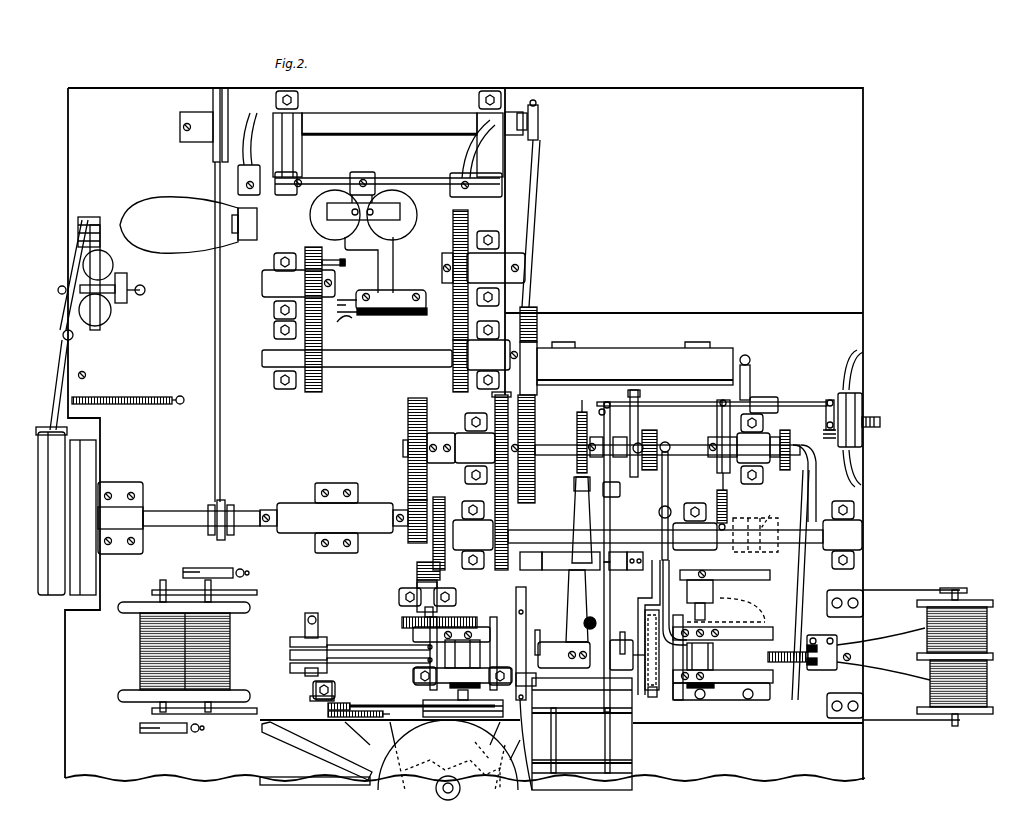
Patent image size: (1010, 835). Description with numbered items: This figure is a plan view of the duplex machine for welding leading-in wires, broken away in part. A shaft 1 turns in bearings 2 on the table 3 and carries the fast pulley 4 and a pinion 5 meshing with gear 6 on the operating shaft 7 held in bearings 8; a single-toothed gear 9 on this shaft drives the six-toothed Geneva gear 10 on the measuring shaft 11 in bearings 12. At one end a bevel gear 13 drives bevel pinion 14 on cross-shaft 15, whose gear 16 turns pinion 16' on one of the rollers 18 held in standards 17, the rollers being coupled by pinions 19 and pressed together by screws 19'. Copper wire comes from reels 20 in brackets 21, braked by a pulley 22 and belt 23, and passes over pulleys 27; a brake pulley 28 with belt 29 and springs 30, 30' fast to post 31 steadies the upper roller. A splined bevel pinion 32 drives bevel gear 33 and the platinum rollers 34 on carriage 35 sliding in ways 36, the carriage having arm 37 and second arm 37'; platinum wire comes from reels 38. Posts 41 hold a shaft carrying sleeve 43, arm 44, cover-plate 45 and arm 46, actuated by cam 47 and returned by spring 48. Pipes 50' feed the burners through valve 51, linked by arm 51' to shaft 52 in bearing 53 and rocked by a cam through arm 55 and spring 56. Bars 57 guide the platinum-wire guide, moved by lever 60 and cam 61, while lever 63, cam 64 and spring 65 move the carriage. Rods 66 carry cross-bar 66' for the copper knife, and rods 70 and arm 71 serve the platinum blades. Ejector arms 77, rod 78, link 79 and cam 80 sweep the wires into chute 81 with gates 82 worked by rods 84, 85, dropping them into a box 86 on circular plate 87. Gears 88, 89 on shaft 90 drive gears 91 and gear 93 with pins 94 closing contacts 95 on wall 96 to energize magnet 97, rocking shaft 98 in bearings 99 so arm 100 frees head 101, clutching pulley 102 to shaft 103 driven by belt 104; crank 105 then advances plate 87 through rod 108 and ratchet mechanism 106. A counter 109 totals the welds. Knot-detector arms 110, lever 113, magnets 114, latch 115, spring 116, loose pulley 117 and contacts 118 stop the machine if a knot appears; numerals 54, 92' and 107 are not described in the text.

The shaft 1 is at (155, 518).
The bearings 2 is at (253, 518).
The table 3 is at (172, 426).
The pulley 4 is at (38, 480).
The pinion 5 is at (395, 493).
The gear 6 is at (408, 463).
The operating shaft 7 is at (545, 445).
The bearings 8 is at (612, 448).
The single-toothed gear 9 is at (505, 481).
The six-toothed gear 10 is at (508, 510).
The measuring shaft 11 is at (531, 532).
The bearings 12 is at (657, 535).
The bevel gear 13 is at (430, 548).
The bevel pinion 14 is at (415, 573).
The cross-shaft 15 is at (405, 607).
The gear 16 is at (420, 623).
The pinion 16' is at (463, 639).
The standards 17 is at (413, 637).
The rollers 18 is at (462, 654).
The pinions 19 is at (462, 682).
The screws 19' is at (476, 647).
The reels 20 is at (220, 600).
The brackets 21 is at (230, 715).
The pulley 22 is at (195, 568).
The belt 23 is at (183, 572).
The pulleys 27 is at (322, 640).
The brake pulley 28 is at (460, 718).
The belt 29 is at (390, 705).
The spring 30 is at (343, 696).
The spring 30' is at (347, 725).
The post 31 is at (312, 697).
The bevel pinion 32 is at (745, 515).
The bevel gear 33 is at (745, 568).
The rollers 34 is at (723, 657).
The carriage 35 is at (765, 607).
The ways 36 is at (776, 693).
The arm 37 is at (700, 600).
The second arm 37' is at (776, 507).
The reels 38 is at (925, 616).
The posts 41 is at (573, 561).
The sleeve 43 is at (571, 561).
The arm 44 is at (575, 590).
The cover-plate 45 is at (564, 655).
The arm 46 is at (576, 500).
The cam 47 is at (577, 420).
The spring 48 is at (597, 626).
The pipes 50' is at (867, 418).
The valve 51 is at (861, 419).
The arm 51' is at (814, 419).
The shaft 52 is at (672, 402).
The bearing 53 is at (764, 405).
The rod 54 is at (720, 470).
The arm 55 is at (720, 425).
The spring 56 is at (720, 500).
The grooved bars 57 is at (662, 690).
The lever 60 is at (654, 568).
The cam 61 is at (650, 470).
The lever 63 is at (798, 610).
The cam 64 is at (812, 462).
The coiled spring 65 is at (790, 665).
The rods 66 is at (534, 645).
The cross-bar 66' is at (539, 678).
The rods 70 is at (650, 697).
The arm 71 is at (668, 610).
The ejector arms 77 is at (537, 630).
The rod 78 is at (611, 585).
The link 79 is at (614, 497).
The cam 80 is at (612, 430).
The chute 81 is at (582, 734).
The gates 82 is at (567, 713).
The rod 84 is at (610, 665).
The rod 85 is at (553, 735).
The box 86 is at (430, 780).
The circular plate 87 is at (435, 770).
The single-toothed gear 88 is at (536, 473).
The eight-toothed gear 89 is at (540, 322).
The shaft 90 is at (373, 360).
The gears 91 is at (322, 386).
The contact 92' is at (337, 322).
The gear 93 is at (452, 237).
The insulated metallic pin 94 is at (346, 272).
The contacts 95 is at (352, 300).
The wall of insulating material 96 is at (388, 318).
The magnet 97 is at (370, 228).
The shaft 98 is at (397, 185).
The bearings 99 is at (285, 197).
The arm 100 is at (245, 168).
The head 101 is at (268, 120).
The pulley 102 is at (213, 100).
The shaft 103 is at (372, 125).
The belt 104 is at (215, 296).
The crank 105 is at (543, 140).
The ratchet and pawl mechanism 106 is at (448, 760).
The lamp 107 is at (188, 225).
The rod 108 is at (541, 195).
The summation counter 109 is at (630, 348).
The arms 110 is at (825, 665).
The lever 113 is at (60, 365).
The magnets 114 is at (110, 318).
The latch 115 is at (58, 290).
The spring 116 is at (145, 398).
The loose pulley 117 is at (83, 517).
The contacts 118 is at (100, 233).